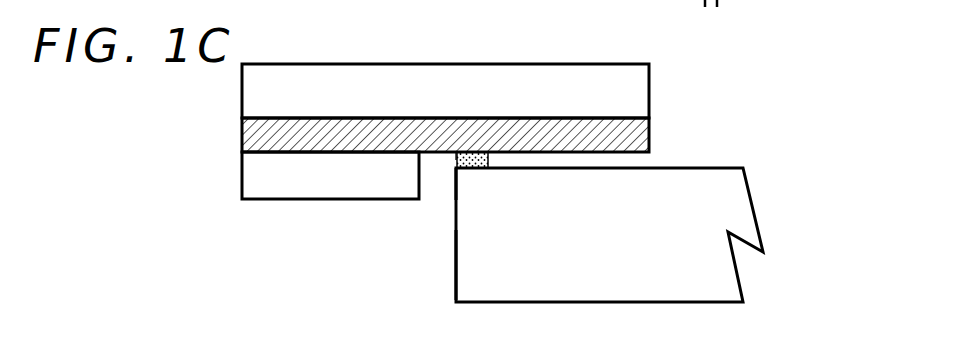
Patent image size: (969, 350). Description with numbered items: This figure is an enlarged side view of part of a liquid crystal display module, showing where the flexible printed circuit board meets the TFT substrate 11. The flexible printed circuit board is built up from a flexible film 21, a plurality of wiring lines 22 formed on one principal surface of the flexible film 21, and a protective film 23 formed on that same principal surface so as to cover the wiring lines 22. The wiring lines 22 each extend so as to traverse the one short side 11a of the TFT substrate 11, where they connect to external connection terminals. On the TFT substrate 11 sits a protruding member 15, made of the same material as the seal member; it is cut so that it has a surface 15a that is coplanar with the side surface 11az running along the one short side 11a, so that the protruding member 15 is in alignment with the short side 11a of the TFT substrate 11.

The TFT substrate 11 is at (738, 183).
The one short side of the TFT substrate 11a is at (453, 171).
The side surface along the one short side 11az is at (453, 261).
The protruding member 15 is at (477, 160).
The surface of the protruding member 15a is at (454, 161).
The flexible film 21 is at (301, 86).
The wiring line 22 is at (372, 128).
The protective film 23 is at (298, 188).